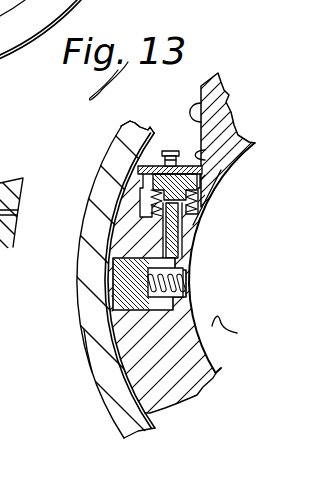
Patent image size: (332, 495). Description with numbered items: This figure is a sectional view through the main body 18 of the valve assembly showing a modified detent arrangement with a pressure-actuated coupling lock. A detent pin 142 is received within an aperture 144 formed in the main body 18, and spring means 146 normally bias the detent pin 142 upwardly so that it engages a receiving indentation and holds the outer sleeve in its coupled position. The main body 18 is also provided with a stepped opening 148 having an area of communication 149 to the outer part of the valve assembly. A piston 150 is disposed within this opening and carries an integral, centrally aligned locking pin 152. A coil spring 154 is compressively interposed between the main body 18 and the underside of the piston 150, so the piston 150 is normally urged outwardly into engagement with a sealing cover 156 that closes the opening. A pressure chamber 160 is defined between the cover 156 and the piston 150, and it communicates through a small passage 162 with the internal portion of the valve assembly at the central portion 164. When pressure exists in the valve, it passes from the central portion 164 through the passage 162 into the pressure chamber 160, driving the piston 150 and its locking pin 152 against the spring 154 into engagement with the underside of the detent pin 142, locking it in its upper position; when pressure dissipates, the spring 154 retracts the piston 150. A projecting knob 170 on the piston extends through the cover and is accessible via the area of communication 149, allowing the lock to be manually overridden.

The main body 18 is at (181, 375).
The detent pin 142 is at (112, 292).
The aperture 144 is at (84, 333).
The spring means 146 is at (180, 290).
The stepped opening 148 is at (224, 159).
The area of communication 149 is at (229, 97).
The piston 150 is at (123, 183).
The locking pin 152 is at (182, 245).
The coil spring 154 is at (196, 218).
The sealing cover 156 is at (123, 158).
The pressure chamber 160 is at (205, 172).
The passage 162 is at (200, 199).
The central portion of the valve assembly 164 is at (236, 329).
The projecting knob 170 is at (170, 150).